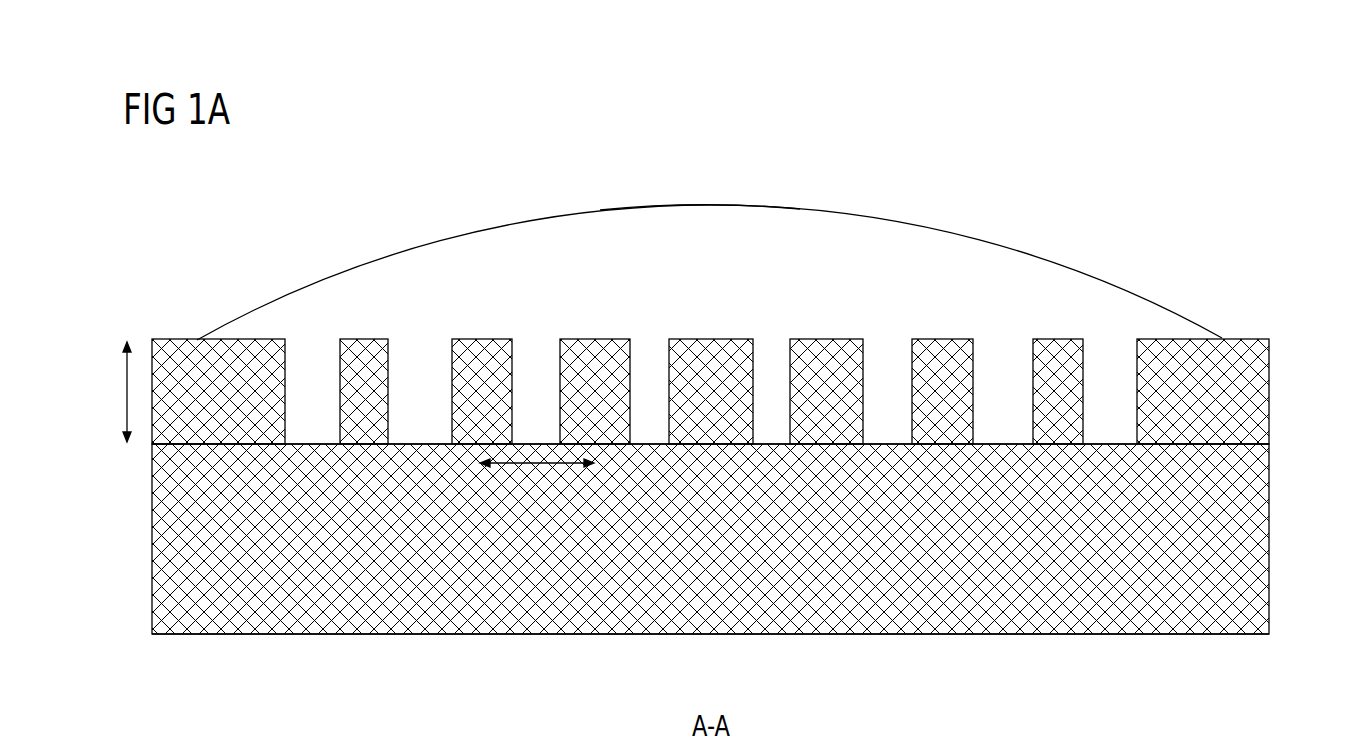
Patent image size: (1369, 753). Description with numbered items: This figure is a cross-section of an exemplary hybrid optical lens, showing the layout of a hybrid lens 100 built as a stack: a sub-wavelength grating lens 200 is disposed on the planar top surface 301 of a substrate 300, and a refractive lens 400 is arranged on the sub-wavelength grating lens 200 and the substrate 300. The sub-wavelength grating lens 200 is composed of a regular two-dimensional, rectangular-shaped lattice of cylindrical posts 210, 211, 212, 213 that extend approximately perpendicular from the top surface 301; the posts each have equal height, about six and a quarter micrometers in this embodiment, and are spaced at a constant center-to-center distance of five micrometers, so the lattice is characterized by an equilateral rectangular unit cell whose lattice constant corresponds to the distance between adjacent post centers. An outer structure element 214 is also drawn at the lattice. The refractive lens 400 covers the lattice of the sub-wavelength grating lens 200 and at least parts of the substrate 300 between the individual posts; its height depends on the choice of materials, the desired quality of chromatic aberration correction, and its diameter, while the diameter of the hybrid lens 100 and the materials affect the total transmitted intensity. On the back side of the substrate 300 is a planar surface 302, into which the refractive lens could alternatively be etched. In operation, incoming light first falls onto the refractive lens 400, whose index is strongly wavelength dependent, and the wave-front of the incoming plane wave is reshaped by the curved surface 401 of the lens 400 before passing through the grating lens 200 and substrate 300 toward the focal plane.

The hybrid lens 100 is at (1148, 142).
The sub-wavelength grating lens 200 is at (456, 342).
The cylindrical post 210 is at (711, 339).
The cylindrical post 211 is at (594, 339).
The cylindrical post 212 is at (481, 339).
The cylindrical post 213 is at (364, 339).
The outer structure element 214 is at (179, 339).
The substrate 300 is at (654, 605).
The planar top surface 301 is at (311, 443).
The planar surface 302 is at (992, 635).
The refractive lens 400 is at (884, 238).
The curved surface 401 is at (694, 204).